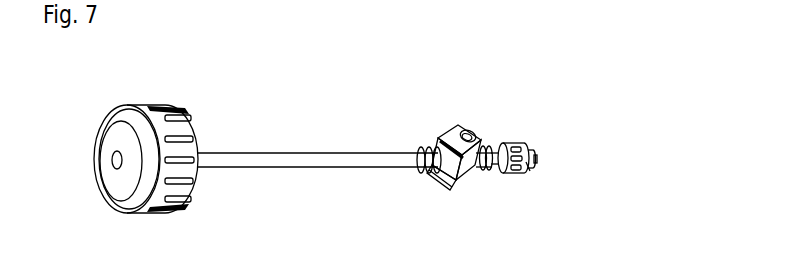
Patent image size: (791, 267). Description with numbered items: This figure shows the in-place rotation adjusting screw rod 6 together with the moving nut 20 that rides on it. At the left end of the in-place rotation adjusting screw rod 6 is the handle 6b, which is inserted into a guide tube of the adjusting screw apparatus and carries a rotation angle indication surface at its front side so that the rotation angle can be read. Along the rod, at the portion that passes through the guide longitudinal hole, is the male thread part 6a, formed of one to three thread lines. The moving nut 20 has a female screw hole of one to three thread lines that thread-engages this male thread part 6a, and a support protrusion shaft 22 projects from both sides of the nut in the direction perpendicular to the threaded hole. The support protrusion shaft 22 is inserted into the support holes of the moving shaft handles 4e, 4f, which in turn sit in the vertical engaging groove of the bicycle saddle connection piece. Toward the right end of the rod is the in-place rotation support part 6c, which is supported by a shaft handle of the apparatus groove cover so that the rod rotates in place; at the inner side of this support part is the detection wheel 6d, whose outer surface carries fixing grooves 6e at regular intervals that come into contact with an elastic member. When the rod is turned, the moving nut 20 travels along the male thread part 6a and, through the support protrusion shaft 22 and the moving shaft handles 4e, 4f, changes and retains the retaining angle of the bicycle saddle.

The in-place rotation adjusting screw rod 6 is at (295, 152).
The male thread part 6a is at (417, 153).
The handle 6b is at (113, 145).
The in-place rotation support part 6c is at (533, 169).
The detection wheel 6d is at (538, 157).
The fixing groove 6e is at (530, 143).
The moving nut 20 is at (466, 183).
The support protrusion shaft 22 is at (474, 136).
The moving shaft handle 4e is at (492, 172).
The moving shaft handle 4f is at (452, 192).